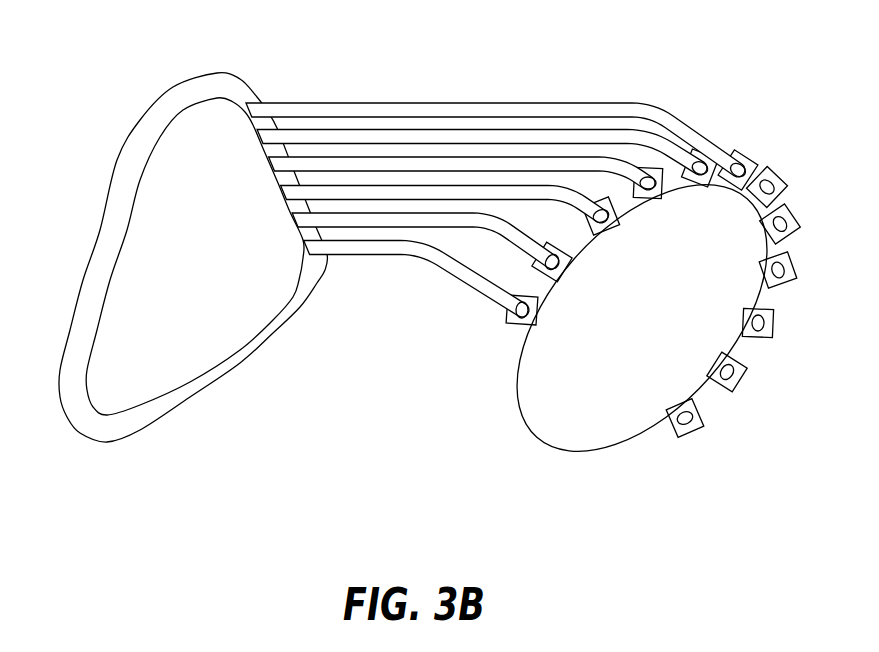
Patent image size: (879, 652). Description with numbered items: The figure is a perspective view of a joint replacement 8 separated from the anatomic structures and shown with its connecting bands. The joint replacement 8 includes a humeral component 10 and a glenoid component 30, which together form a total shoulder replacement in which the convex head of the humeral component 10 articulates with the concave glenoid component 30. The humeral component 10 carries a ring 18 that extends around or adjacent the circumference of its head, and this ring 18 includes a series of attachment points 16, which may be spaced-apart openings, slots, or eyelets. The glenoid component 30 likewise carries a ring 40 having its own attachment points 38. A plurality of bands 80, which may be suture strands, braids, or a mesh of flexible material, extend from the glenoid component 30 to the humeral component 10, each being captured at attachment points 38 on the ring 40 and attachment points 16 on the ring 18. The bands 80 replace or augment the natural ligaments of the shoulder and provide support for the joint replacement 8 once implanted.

The joint replacement 8 is at (797, 50).
The humeral component 10 is at (535, 294).
The attachment points 16 is at (535, 255).
The ring 18 is at (568, 453).
The glenoid component 30 is at (173, 280).
The attachment points 38 is at (258, 109).
The ring 40 is at (207, 388).
The bands 80 is at (453, 107).